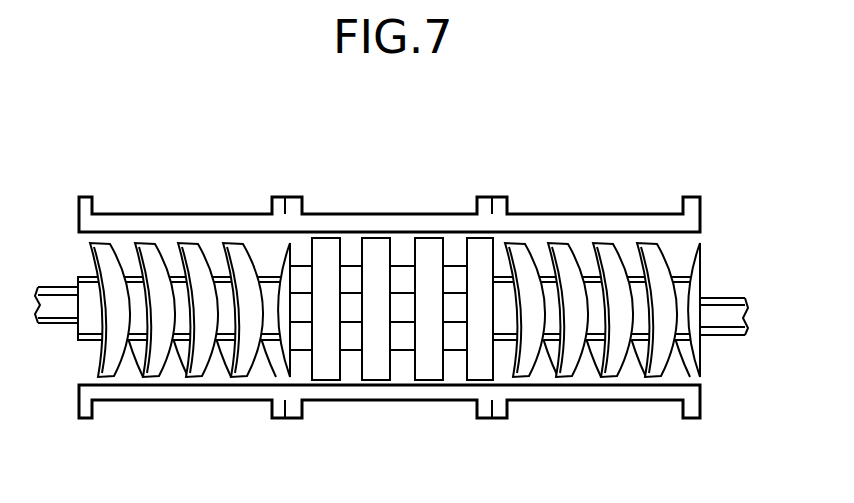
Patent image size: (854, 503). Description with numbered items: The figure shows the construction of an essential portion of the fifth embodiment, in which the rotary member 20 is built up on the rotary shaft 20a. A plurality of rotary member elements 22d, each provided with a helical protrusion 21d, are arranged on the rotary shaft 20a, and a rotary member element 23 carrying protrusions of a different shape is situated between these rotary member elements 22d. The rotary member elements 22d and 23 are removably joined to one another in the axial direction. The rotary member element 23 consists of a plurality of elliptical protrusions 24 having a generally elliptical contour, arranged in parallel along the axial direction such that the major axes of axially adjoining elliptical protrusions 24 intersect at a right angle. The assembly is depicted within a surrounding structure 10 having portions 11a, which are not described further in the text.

The housing 10 is at (389, 261).
The housing channel portion 11a is at (178, 218).
The rotary member 20 is at (405, 319).
The rotary shaft 20a is at (720, 323).
The helical protrusion 21d is at (128, 372).
The rotary member element 22d is at (201, 380).
The rotary member element 23 is at (401, 380).
The elliptical protrusion 24 is at (328, 372).